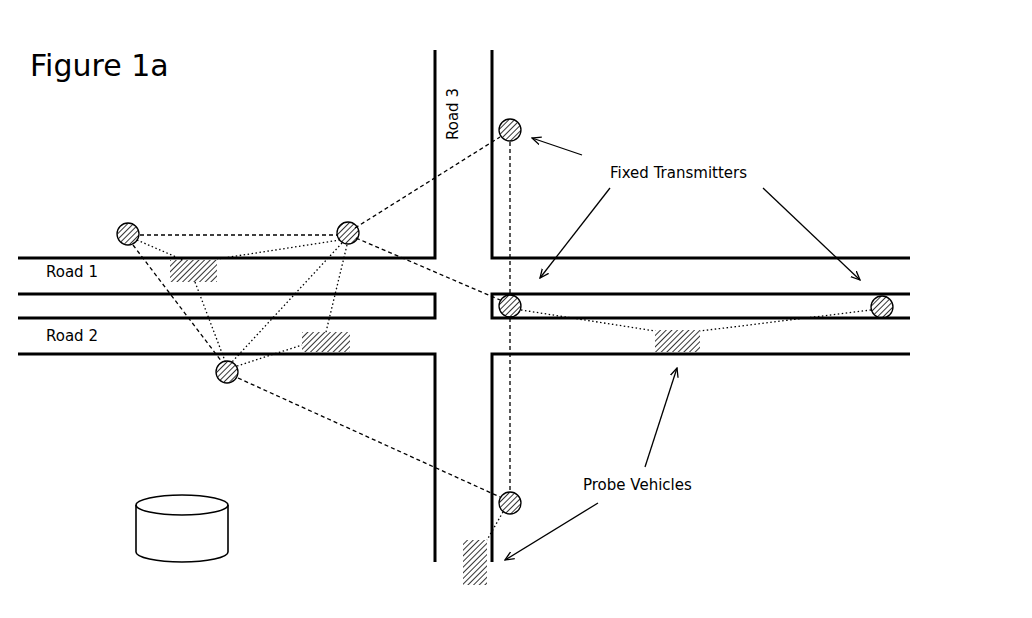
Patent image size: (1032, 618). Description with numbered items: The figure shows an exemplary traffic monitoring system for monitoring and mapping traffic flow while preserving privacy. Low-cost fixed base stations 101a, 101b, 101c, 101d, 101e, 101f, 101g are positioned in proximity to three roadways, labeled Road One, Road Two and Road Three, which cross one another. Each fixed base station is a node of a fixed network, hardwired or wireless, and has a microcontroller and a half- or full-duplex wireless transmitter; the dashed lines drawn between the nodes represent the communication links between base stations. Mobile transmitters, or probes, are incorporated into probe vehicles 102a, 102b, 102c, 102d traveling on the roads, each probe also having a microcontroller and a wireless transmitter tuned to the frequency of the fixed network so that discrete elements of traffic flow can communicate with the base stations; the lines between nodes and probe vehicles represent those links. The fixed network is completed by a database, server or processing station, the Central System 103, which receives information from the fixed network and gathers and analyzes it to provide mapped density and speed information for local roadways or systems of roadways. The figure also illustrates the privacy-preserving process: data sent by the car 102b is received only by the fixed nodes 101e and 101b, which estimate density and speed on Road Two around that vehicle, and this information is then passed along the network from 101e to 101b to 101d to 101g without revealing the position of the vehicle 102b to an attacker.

The fixed base station 101a is at (132, 226).
The fixed base station 101b is at (337, 225).
The fixed base station 101c is at (516, 123).
The fixed base station 101d is at (495, 294).
The fixed base station 101e is at (215, 379).
The fixed base station 101f is at (524, 496).
The fixed base station 101g is at (903, 307).
The probe vehicle 102a is at (214, 271).
The probe vehicle 102b is at (347, 342).
The probe vehicle 102c is at (698, 342).
The probe vehicle 102d is at (464, 553).
The Central System 103 is at (182, 516).